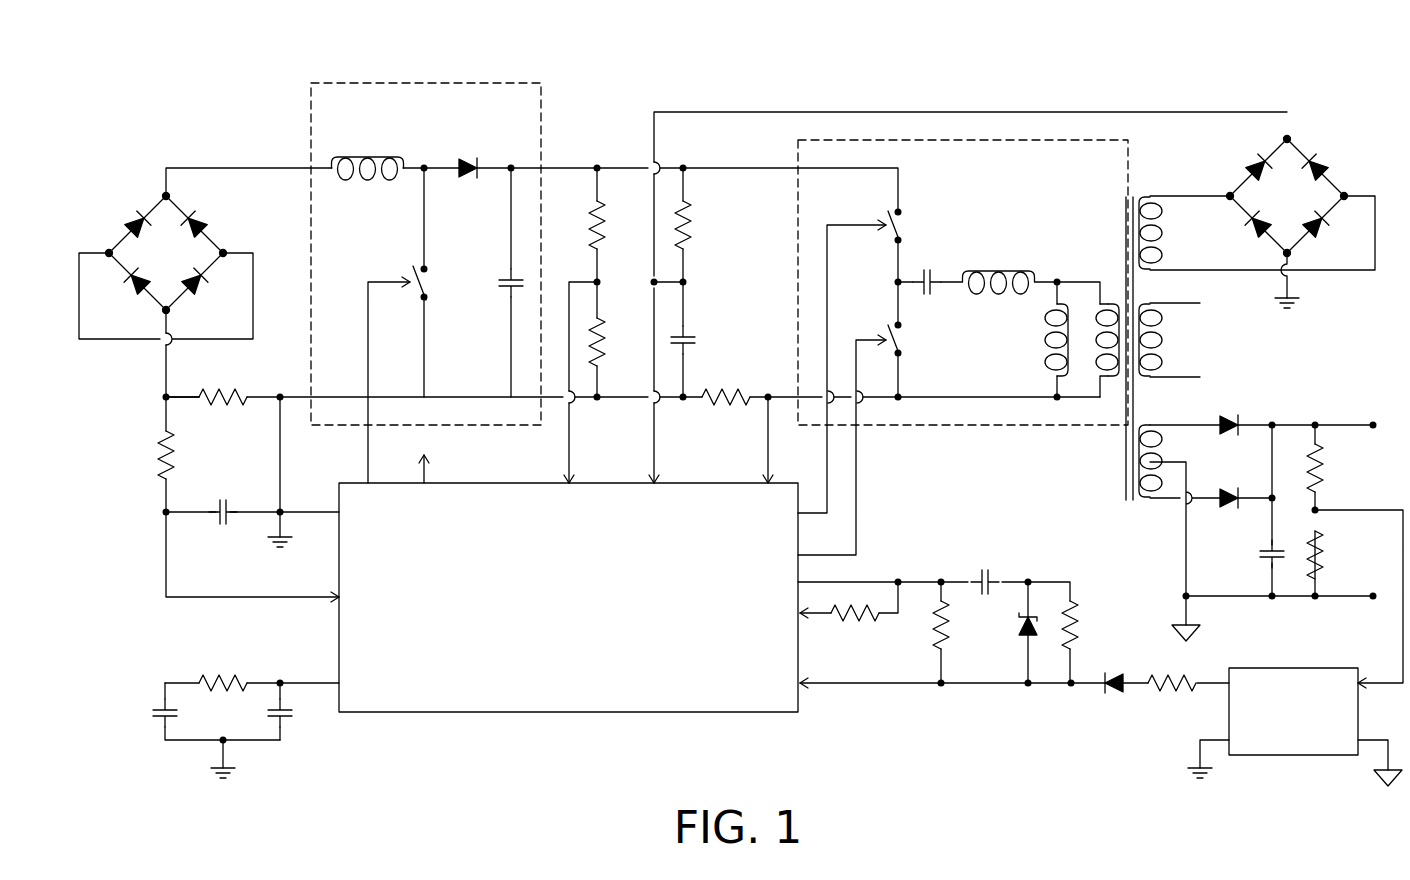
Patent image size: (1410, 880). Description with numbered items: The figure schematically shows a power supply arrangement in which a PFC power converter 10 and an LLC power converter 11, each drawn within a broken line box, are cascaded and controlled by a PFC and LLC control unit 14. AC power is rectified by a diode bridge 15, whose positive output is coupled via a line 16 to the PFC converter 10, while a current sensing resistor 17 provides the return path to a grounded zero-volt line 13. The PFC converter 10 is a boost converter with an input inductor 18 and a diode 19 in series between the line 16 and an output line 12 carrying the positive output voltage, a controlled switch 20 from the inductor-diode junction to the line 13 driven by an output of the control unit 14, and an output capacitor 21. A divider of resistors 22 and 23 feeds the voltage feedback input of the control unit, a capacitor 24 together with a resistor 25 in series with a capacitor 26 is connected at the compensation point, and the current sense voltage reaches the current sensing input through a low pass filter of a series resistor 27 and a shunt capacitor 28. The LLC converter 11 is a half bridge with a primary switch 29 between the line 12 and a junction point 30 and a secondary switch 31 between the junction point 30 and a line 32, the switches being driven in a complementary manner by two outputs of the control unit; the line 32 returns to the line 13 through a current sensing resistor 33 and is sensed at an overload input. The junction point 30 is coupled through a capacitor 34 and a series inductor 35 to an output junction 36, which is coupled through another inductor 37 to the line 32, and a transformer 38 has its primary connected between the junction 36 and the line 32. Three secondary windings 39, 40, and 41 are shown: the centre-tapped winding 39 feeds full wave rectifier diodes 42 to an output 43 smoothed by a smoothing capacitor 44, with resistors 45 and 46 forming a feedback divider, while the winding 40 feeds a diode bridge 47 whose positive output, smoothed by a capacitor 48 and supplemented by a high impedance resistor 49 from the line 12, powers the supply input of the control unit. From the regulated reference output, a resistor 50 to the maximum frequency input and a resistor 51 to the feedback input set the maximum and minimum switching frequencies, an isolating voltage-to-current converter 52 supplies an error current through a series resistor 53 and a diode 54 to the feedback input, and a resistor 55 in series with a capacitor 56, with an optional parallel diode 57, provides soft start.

The PFC power converter 10 is at (413, 152).
The LLC power converter 11 is at (1000, 211).
The line 12 is at (625, 167).
The zero-volt (0V) line 13 is at (450, 463).
The PFC and LLC control unit 14 is at (554, 626).
The diode bridge 15 is at (153, 267).
The line 16 is at (231, 167).
The current sensing resistor 17 is at (226, 405).
The input inductor 18 is at (377, 183).
The diode 19 is at (477, 182).
The controlled switch 20 is at (406, 270).
The output capacitor 21 is at (492, 282).
The resistor 22 is at (587, 225).
The resistor 23 is at (607, 338).
The capacitor 24 is at (290, 722).
The resistor 25 is at (224, 672).
The capacitor 26 is at (145, 708).
The series resistor 27 is at (157, 453).
The shunt capacitor 28 is at (225, 530).
The primary switch 29 is at (883, 215).
The junction point 30 is at (888, 277).
The secondary switch 31 is at (886, 332).
The line 32 is at (968, 400).
The current sensing resistor 33 is at (726, 407).
The capacitor 34 is at (930, 303).
The series inductor 35 is at (968, 267).
The output junction 36 is at (1058, 270).
The inductor 37 is at (1043, 347).
The transformer 38 is at (1120, 417).
The secondary winding 39 is at (1150, 510).
The secondary winding 40 is at (1162, 225).
The secondary winding 41 is at (1162, 330).
The full wave rectifier diodes 42 is at (1217, 476).
The output 43 is at (1371, 420).
The smoothing capacitor 44 is at (1257, 552).
The resistor 45 is at (1322, 465).
The resistor 46 is at (1322, 550).
The diode bridge 47 is at (1274, 210).
The capacitor 48 is at (702, 337).
The high impedance resistor 49 is at (692, 238).
The resistor 50 is at (850, 618).
The resistor 51 is at (932, 633).
The electrically isolating voltage-to-current (V-I) converter 52 is at (1288, 668).
The series resistor 53 is at (1150, 697).
The diode 54 is at (1093, 700).
The resistor 55 is at (1086, 626).
The capacitor 56 is at (982, 563).
The diode 57 is at (1013, 625).